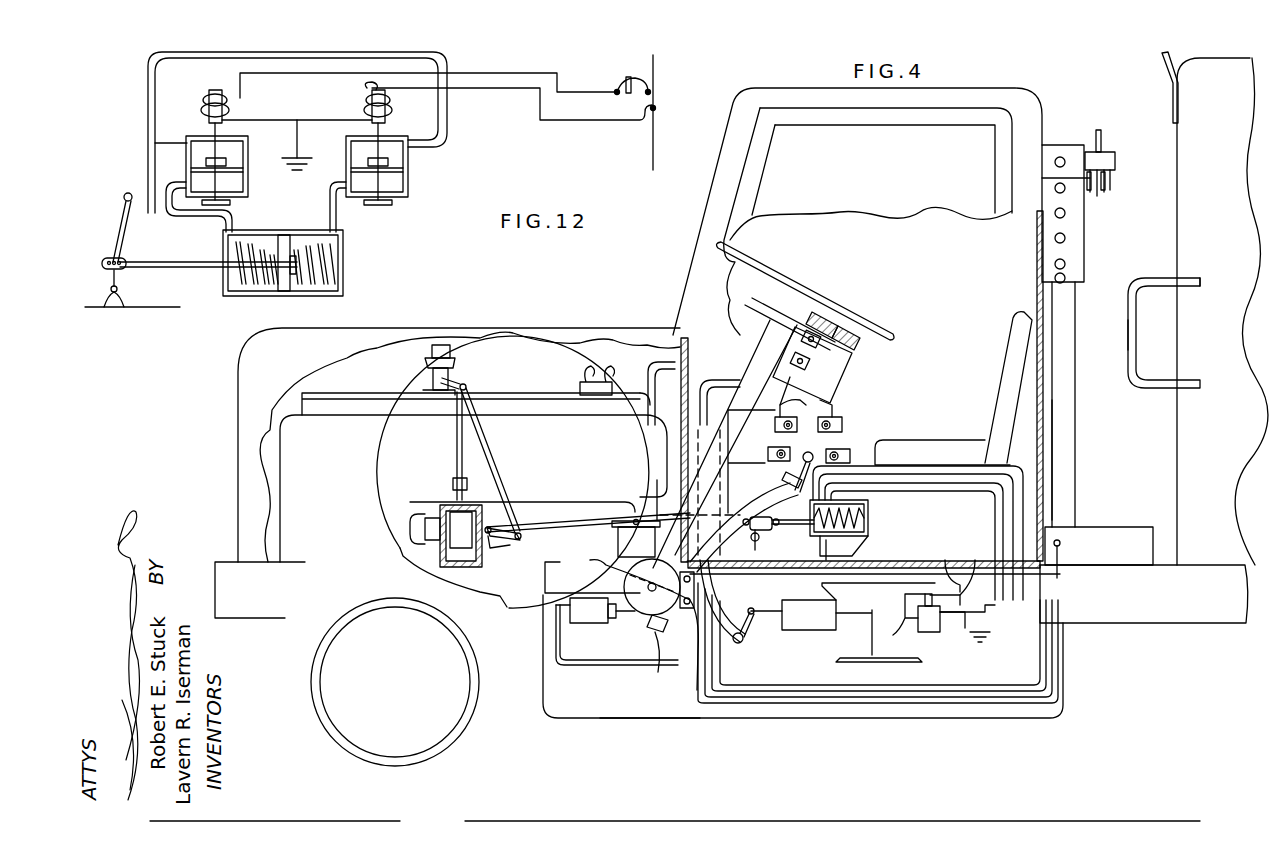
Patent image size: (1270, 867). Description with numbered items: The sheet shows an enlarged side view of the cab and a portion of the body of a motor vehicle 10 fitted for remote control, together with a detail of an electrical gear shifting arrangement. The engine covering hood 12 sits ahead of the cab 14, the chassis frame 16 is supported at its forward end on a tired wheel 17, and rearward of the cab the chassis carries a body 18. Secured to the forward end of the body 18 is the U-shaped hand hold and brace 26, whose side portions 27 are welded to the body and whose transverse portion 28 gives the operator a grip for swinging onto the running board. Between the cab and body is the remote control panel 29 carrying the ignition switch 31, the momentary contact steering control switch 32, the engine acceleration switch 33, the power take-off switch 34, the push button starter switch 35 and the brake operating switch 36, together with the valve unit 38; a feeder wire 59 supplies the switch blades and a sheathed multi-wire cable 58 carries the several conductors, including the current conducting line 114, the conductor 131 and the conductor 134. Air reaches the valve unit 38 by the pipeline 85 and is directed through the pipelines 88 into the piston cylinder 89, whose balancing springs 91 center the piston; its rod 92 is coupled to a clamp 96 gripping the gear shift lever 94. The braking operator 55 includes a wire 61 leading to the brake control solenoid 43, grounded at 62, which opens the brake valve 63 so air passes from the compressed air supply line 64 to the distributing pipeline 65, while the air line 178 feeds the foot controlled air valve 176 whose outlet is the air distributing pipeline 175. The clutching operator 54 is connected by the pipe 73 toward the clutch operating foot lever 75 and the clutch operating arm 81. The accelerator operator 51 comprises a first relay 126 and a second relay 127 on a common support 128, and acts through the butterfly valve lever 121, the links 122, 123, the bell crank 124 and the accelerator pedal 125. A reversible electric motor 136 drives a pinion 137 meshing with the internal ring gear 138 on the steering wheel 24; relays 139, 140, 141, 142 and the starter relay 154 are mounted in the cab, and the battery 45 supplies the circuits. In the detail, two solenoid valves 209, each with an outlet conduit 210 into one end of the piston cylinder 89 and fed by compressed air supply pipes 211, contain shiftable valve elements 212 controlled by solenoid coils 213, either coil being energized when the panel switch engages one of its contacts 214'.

In FIG. 4, the motor vehicle 10 is at (231, 394).
In FIG. 4, the engine covering hood 12 is at (430, 332).
In FIG. 4, the cab 14 is at (743, 88).
In FIG. 4, the chassis frame 16 is at (1200, 612).
In FIG. 4, the tired wheel 17 is at (505, 756).
In FIG. 4, the body 18 is at (1188, 206).
In FIG. 4, the steering wheel 24 is at (792, 276).
In FIG. 4, the hand hold and brace 26 is at (1153, 266).
In FIG. 4, the side portions 27 is at (1190, 282).
In FIG. 4, the transverse portion 28 is at (1128, 338).
In FIG. 4, the remote control panel 29 is at (1089, 242).
In FIG. 4, the remote control ignition switch 31 is at (1054, 162).
In FIG. 4, the momentary contact steering control switch 32 is at (1055, 190).
In FIG. 4, the engine acceleration switch 33 is at (1055, 215).
In FIG. 4, the power take-off switch 34 is at (1055, 240).
In FIG. 4, the push button starter switch 35 is at (1055, 265).
In FIG. 4, the remote control brake operating switch 36 is at (1055, 279).
In FIG. 4, the valve unit 38 is at (1120, 149).
In FIG. 4, the brake control solenoid 43 is at (925, 600).
In FIG. 4, the vehicle battery 45 is at (1119, 517).
In FIG. 4, the accelerator operator 51 is at (438, 497).
In FIG. 4, the clutching operator 54 is at (594, 620).
In FIG. 4, the braking operator 55 is at (784, 635).
In FIG. 4, the sheathed multi-wire cable 58 is at (1082, 470).
In FIG. 12, the feeder wire 59 is at (652, 140).
In FIG. 4, the wire 61 is at (980, 567).
In FIG. 4, the ground 62 is at (985, 638).
In FIG. 4, the brake valve 63 is at (930, 622).
In FIG. 4, the compressed air supply line 64 is at (903, 624).
In FIG. 4, the distributing pipeline 65 is at (958, 616).
In FIG. 4, the pipe 73 is at (632, 665).
In FIG. 4, the clutch operating foot lever 75 is at (710, 467).
In FIG. 4, the clutch operating arm 81 is at (662, 653).
In FIG. 4, the pipeline 85 is at (1042, 180).
In FIG. 4, the pipelines 88 is at (1112, 182).
In FIG. 12, the piston cylinder 89 is at (343, 244).
In FIG. 4, the piston cylinder 89 is at (868, 540).
In FIG. 12, the balancing springs 91 is at (322, 268).
In FIG. 12, the rod 92 is at (200, 268).
In FIG. 12, the gear shift lever 94 is at (118, 232).
In FIG. 12, the clamp 96 is at (106, 267).
In FIG. 4, the clamp 96 is at (775, 560).
In FIG. 4, the current conducting line 114 is at (780, 578).
In FIG. 4, the butterfly valve lever 121 is at (467, 380).
In FIG. 4, the link 122 is at (492, 446).
In FIG. 4, the link 123 is at (588, 522).
In FIG. 4, the bell crank 124 is at (528, 516).
In FIG. 4, the accelerator pedal 125 is at (818, 503).
In FIG. 4, the first relay 126 is at (425, 528).
In FIG. 4, the second relay 127 is at (450, 520).
In FIG. 4, the common support 128 is at (535, 619).
In FIG. 4, the conductor 131 is at (690, 719).
In FIG. 4, the conductor 134 is at (487, 500).
In FIG. 4, the reversible electric motor 136 is at (860, 370).
In FIG. 4, the pinion 137 is at (850, 334).
In FIG. 4, the internal ring gear 138 is at (826, 318).
In FIG. 4, the relay 139 is at (843, 418).
In FIG. 4, the relay 140 is at (850, 448).
In FIG. 4, the relay 141 is at (776, 420).
In FIG. 4, the relay 142 is at (770, 449).
In FIG. 4, the starter relay 154 is at (625, 530).
In FIG. 4, the air distributing pipeline 175 is at (886, 662).
In FIG. 4, the foot controlled air valve 176 is at (818, 618).
In FIG. 4, the air line 178 is at (962, 560).
In FIG. 12, the solenoid valves 209 is at (186, 165).
In FIG. 12, the outlet conduit 210 is at (186, 216).
In FIG. 12, the compressed air supply pipes 211 is at (158, 140).
In FIG. 12, the shiftable valve elements 212 is at (228, 158).
In FIG. 12, the solenoid coils 213 is at (232, 104).
In FIG. 12, the contacts 214' is at (510, 82).